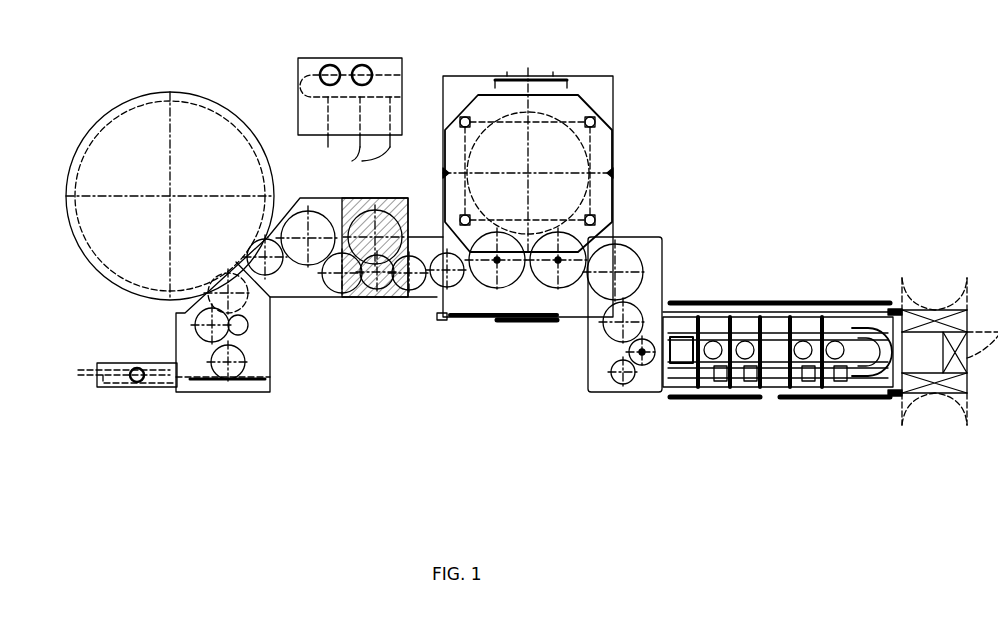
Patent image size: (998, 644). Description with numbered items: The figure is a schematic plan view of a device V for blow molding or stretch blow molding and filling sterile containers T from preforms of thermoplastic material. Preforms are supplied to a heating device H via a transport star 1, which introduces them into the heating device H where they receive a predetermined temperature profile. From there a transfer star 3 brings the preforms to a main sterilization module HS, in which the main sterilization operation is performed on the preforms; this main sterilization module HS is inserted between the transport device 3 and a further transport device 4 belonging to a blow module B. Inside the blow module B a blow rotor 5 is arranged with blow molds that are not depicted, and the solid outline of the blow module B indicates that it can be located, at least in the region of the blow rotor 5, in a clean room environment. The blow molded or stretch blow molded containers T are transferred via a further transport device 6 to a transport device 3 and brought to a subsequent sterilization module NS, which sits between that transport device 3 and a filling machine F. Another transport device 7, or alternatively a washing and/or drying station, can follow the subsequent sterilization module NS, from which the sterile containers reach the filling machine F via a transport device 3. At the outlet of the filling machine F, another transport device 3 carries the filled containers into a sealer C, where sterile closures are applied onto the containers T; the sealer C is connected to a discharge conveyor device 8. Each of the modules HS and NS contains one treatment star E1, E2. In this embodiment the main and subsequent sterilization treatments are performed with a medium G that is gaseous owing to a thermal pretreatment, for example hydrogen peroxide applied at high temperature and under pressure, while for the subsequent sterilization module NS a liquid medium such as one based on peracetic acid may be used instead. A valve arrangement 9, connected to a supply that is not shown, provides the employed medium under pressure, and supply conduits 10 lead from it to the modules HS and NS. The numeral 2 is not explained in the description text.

The filling machine F is at (218, 126).
The valve arrangement 9 is at (390, 67).
The supply conduits 10 is at (365, 167).
The transport device 7 is at (310, 208).
The subsequent sterilization module NS is at (372, 196).
The treatment star E2 is at (408, 199).
The blow module B is at (593, 91).
The blow rotor 5 is at (587, 156).
The transport device 6 is at (507, 289).
The transport device 4 is at (545, 289).
The transfer star / transport device 3 is at (280, 272).
The main sterilization module HS is at (648, 233).
The medium G is at (633, 288).
The treatment star E1 is at (632, 262).
The device V is at (674, 142).
The transport star 1 is at (621, 394).
The roller 2 is at (646, 394).
The heating device H is at (777, 300).
The containers T is at (133, 366).
The discharge conveyor device 8 is at (157, 366).
The sealer C is at (265, 370).